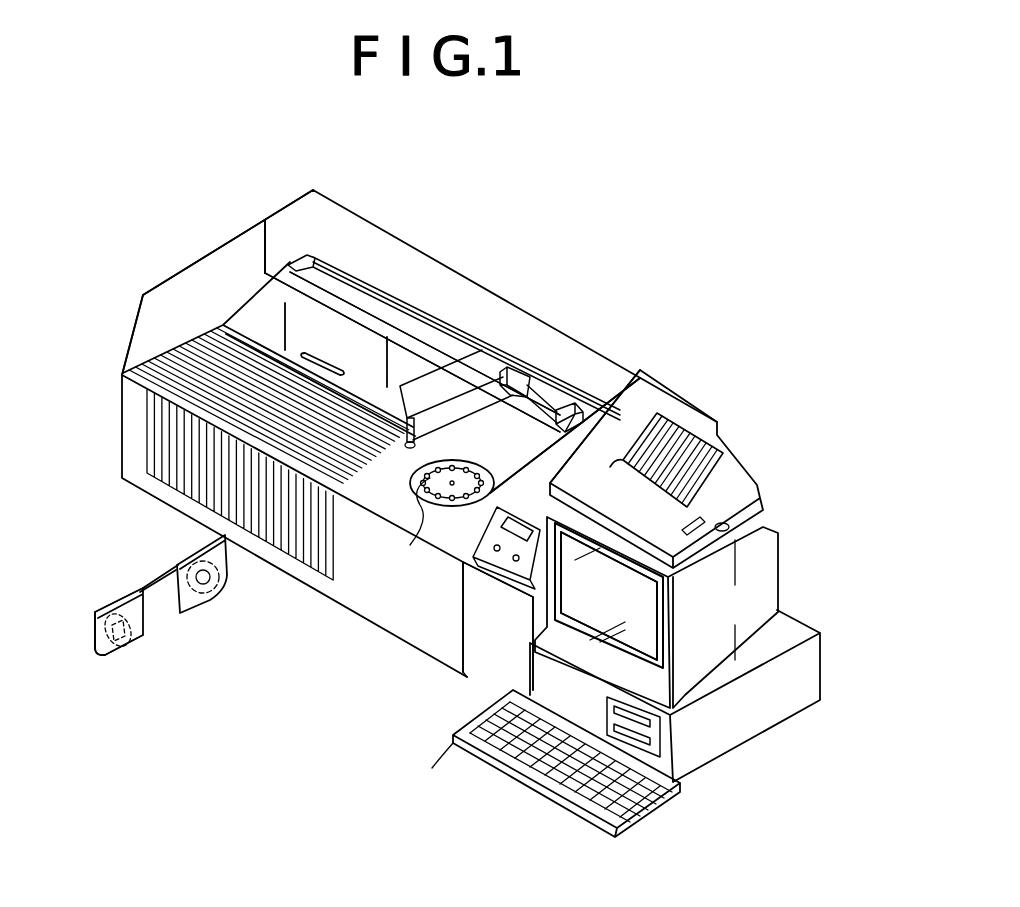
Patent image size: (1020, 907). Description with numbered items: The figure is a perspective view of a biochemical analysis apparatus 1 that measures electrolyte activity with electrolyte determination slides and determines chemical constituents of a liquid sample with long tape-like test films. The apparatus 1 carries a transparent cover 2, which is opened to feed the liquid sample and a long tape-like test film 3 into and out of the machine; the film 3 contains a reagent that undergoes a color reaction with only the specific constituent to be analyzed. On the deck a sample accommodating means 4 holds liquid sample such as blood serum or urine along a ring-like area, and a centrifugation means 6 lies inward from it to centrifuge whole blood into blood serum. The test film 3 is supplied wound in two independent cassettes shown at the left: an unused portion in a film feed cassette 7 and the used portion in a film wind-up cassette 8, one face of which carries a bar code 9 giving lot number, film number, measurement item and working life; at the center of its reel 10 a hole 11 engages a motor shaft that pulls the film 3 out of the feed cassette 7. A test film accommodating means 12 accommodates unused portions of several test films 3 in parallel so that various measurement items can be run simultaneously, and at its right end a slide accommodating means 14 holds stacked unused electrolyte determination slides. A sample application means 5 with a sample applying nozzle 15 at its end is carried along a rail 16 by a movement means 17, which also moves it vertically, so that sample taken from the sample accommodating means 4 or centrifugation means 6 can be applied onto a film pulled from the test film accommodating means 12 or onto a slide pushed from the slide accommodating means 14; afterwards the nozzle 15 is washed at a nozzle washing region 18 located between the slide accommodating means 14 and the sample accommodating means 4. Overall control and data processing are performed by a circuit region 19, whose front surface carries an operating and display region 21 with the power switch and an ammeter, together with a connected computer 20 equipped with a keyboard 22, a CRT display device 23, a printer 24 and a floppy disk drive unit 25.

The biochemical analysis apparatus 1 is at (519, 251).
The transparent cover 2 is at (222, 265).
The long tape-like test film 3 is at (152, 580).
The sample accommodating means 4 is at (555, 490).
The sample application means 5 is at (433, 397).
The centrifugation means 6 is at (445, 466).
The film feed cassette 7 is at (200, 540).
The film wind-up cassette 8 is at (100, 608).
The bar code 9 is at (108, 630).
The reel 10 is at (118, 660).
The hole 11 is at (122, 640).
The test film accommodating means 12 is at (315, 312).
The slide accommodating means 14 is at (568, 410).
The sample applying nozzle 15 is at (405, 447).
The rail 16 is at (547, 403).
The movement means 17 is at (512, 378).
The nozzle washing region 18 is at (425, 478).
The circuit region 19 is at (497, 634).
The computer 20 is at (809, 504).
The operating and display region 21 is at (487, 557).
The keyboard 22 is at (460, 750).
The CRT display device 23 is at (672, 630).
The printer 24 is at (718, 483).
The floppy disk drive unit 25 is at (668, 716).